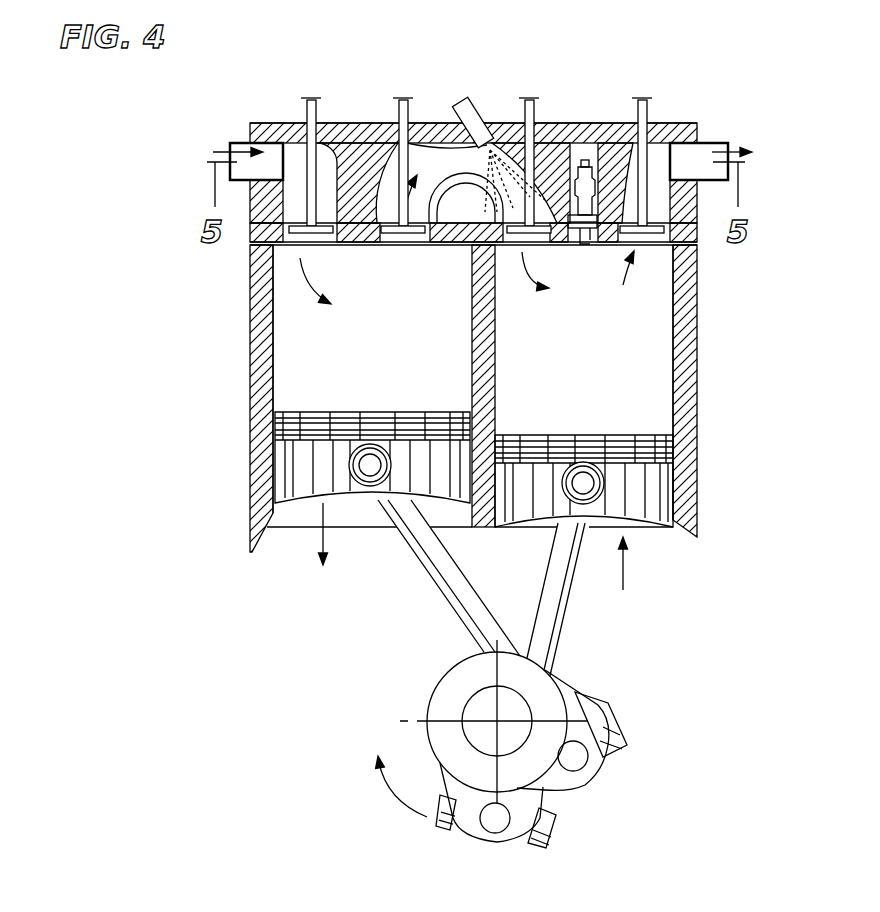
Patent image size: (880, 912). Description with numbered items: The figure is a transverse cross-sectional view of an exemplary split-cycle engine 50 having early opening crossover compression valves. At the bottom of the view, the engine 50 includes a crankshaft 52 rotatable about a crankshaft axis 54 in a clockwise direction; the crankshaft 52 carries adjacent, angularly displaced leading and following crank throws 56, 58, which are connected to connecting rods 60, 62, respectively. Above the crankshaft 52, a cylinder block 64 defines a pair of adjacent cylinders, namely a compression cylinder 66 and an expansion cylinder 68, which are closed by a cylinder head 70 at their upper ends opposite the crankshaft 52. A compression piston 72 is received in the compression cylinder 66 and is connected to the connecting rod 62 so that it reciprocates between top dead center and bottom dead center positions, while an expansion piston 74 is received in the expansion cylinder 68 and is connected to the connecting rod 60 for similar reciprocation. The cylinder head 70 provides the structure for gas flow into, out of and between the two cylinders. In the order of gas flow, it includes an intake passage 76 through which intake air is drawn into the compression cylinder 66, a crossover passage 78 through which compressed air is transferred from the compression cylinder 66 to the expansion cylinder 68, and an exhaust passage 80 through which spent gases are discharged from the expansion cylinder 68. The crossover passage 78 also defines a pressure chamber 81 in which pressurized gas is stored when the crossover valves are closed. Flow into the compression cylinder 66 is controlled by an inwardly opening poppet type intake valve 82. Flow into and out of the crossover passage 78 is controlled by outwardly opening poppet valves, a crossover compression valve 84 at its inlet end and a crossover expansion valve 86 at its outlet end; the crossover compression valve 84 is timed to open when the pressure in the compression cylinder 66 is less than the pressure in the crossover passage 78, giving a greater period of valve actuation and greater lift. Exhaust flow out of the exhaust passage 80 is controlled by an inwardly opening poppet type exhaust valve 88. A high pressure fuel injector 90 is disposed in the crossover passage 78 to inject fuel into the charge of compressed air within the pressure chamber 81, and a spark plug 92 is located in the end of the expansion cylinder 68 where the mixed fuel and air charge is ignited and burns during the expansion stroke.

The split-cycle engine 50 is at (703, 105).
The crankshaft 52 is at (486, 696).
The crankshaft axis 54 is at (490, 716).
The leading crank throw 56 is at (489, 842).
The following crank throw 58 is at (585, 780).
The connecting rod 60 is at (570, 618).
The connecting rod 62 is at (425, 572).
The cylinder block 64 is at (236, 415).
The compression cylinder 66 is at (268, 340).
The expansion cylinder 68 is at (664, 340).
The cylinder head 70 is at (705, 128).
The compression piston 72 is at (298, 507).
The expansion piston 74 is at (638, 523).
The intake passage 76 is at (229, 142).
The crossover passage 78 is at (452, 138).
The exhaust passage 80 is at (731, 145).
The pressure chamber 81 is at (449, 133).
The intake valve 82 is at (305, 120).
The crossover compression valve 84 is at (397, 118).
The crossover expansion valve 86 is at (537, 108).
The exhaust valve 88 is at (650, 112).
The fuel injector 90 is at (476, 103).
The spark plug 92 is at (587, 165).